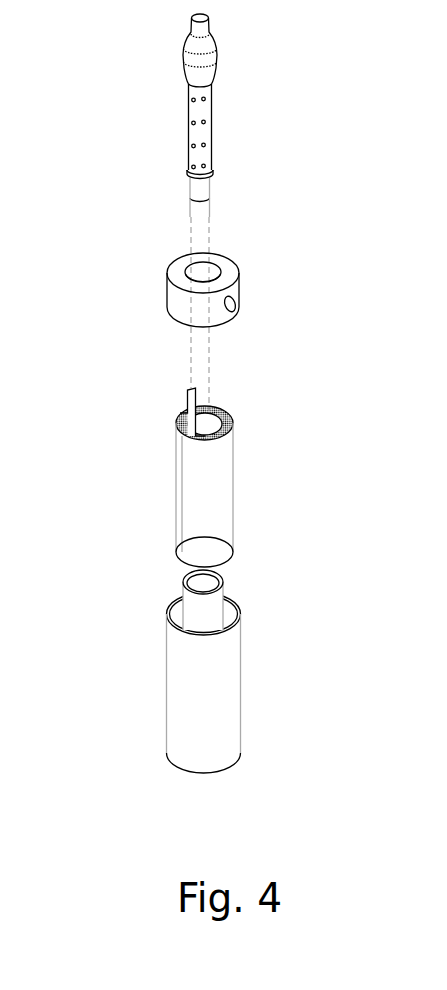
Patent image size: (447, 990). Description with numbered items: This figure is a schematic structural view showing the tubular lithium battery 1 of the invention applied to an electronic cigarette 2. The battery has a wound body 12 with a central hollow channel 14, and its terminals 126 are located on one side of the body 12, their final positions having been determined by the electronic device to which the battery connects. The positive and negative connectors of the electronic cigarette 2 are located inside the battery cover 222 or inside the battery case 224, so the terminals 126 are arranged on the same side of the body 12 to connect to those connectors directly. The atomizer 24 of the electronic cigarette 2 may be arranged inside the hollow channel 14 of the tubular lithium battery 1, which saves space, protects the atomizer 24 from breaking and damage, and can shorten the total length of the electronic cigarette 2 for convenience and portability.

The electronic cigarette 2 is at (256, 84).
The atomizer 24 is at (194, 110).
The battery cover 222 is at (176, 296).
The tubular lithium battery 1 is at (177, 388).
The body 12 is at (228, 491).
The hollow channel 14 is at (209, 412).
The terminals 126 is at (188, 397).
The battery case 224 is at (187, 689).